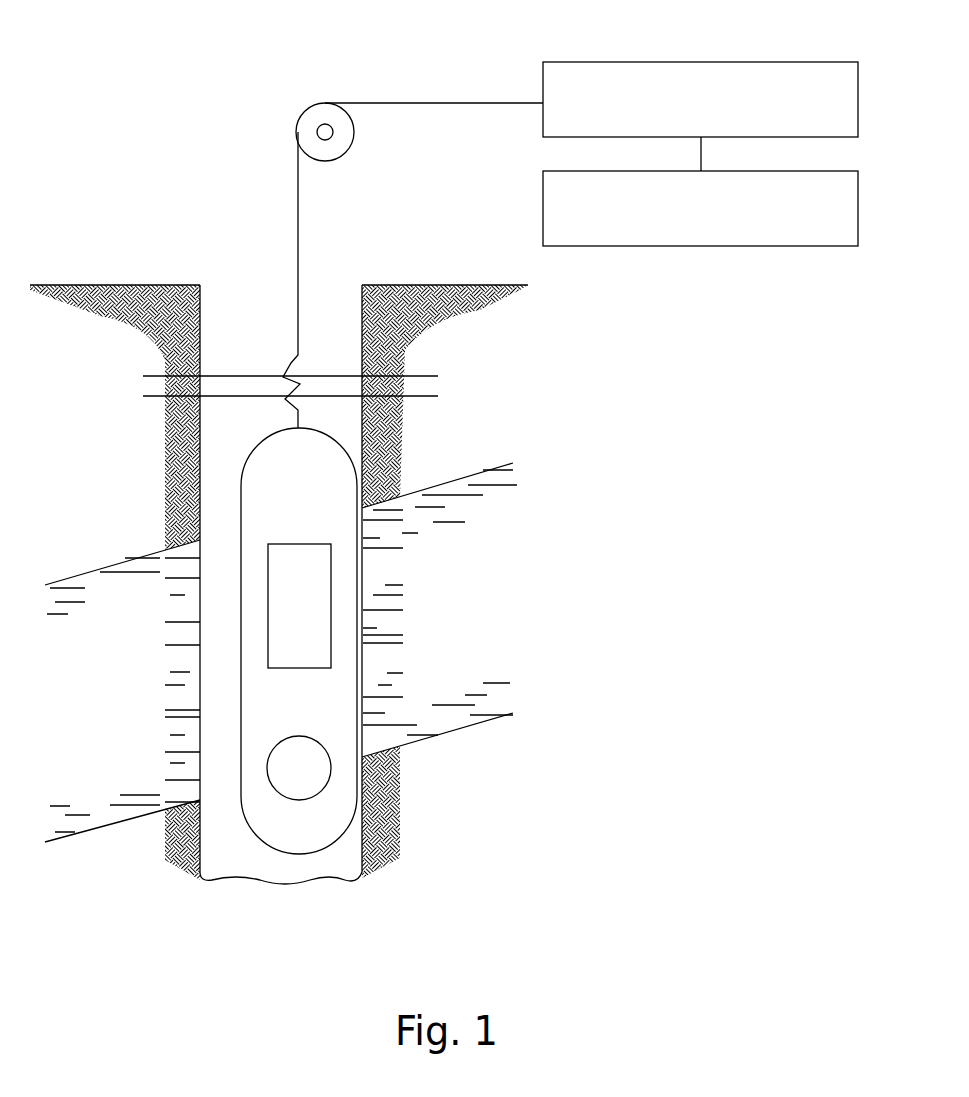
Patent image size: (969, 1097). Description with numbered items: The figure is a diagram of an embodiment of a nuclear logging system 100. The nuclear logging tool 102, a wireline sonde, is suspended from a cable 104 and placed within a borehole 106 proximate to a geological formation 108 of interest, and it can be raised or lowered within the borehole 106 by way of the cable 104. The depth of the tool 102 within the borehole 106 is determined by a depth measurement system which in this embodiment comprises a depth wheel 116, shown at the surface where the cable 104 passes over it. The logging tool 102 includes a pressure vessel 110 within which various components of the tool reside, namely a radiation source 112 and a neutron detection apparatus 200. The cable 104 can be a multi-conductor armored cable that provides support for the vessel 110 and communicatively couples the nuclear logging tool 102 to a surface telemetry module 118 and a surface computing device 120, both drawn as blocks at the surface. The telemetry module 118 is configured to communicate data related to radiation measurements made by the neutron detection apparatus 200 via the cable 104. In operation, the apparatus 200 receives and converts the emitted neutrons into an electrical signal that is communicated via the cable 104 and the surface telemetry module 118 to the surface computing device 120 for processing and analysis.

The nuclear logging system 100 is at (166, 114).
The nuclear logging tool 102 is at (241, 492).
The cable 104 is at (297, 229).
The borehole 106 is at (267, 334).
The geological formation 108 is at (484, 607).
The pressure vessel 110 is at (329, 464).
The radiation source 112 is at (288, 787).
The depth wheel 116 is at (342, 156).
The surface telemetry module 118 is at (643, 62).
The surface computing device 120 is at (745, 246).
The neutron detection apparatus 200 is at (275, 635).